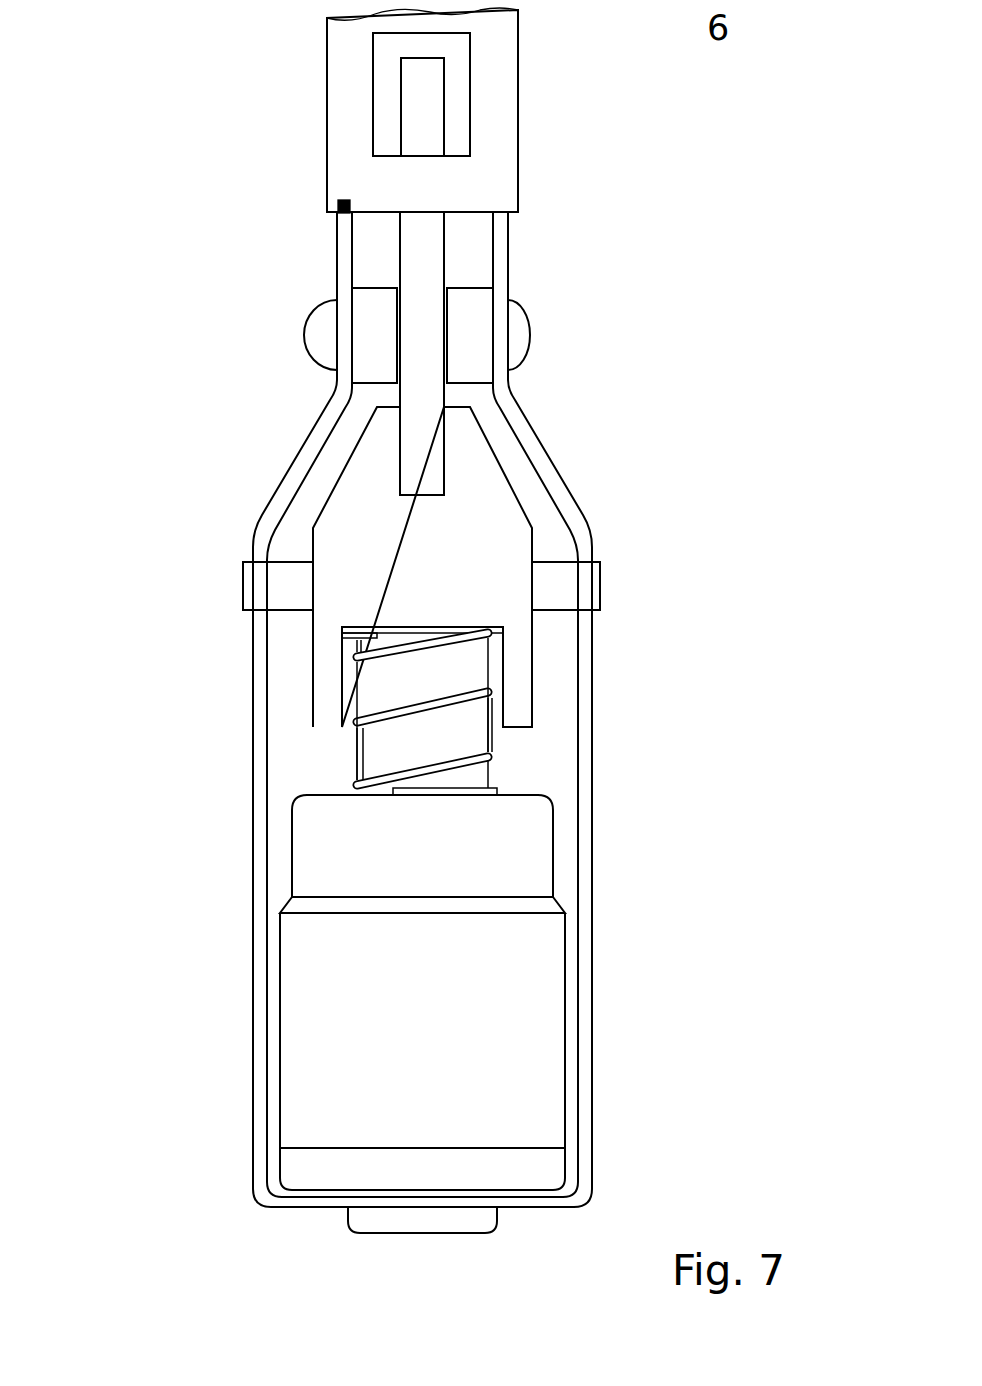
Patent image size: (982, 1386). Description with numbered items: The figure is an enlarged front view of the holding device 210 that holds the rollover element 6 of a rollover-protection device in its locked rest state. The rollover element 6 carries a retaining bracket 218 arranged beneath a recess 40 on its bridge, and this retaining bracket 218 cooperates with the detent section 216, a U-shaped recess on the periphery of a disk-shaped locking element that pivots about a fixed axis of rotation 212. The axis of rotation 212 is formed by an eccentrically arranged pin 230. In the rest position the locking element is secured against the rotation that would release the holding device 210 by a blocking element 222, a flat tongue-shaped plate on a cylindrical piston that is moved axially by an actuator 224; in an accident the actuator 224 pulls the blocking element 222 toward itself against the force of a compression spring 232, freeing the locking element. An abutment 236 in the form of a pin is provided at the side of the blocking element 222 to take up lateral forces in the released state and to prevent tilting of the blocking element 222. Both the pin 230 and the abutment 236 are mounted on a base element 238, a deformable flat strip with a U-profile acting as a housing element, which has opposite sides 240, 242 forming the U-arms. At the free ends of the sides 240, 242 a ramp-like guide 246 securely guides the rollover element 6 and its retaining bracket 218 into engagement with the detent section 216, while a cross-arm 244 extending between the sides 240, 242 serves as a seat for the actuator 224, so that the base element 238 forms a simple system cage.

The rollover element 6 is at (705, 28).
The recess 40 is at (370, 92).
The retaining bracket 218 is at (463, 178).
The ramp-like guide 246 is at (340, 207).
The detent section 216 is at (423, 212).
The axis of rotation 212 is at (540, 335).
The pin 230 is at (328, 323).
The holding device 210 is at (533, 440).
The blocking element 222 is at (457, 540).
The abutment 236 is at (553, 590).
The compression spring 232 is at (413, 645).
The side 242 is at (585, 748).
The base element 238 is at (253, 980).
The actuator 224 is at (457, 1035).
The side 240 is at (260, 1060).
The cross-arm 244 is at (315, 1200).